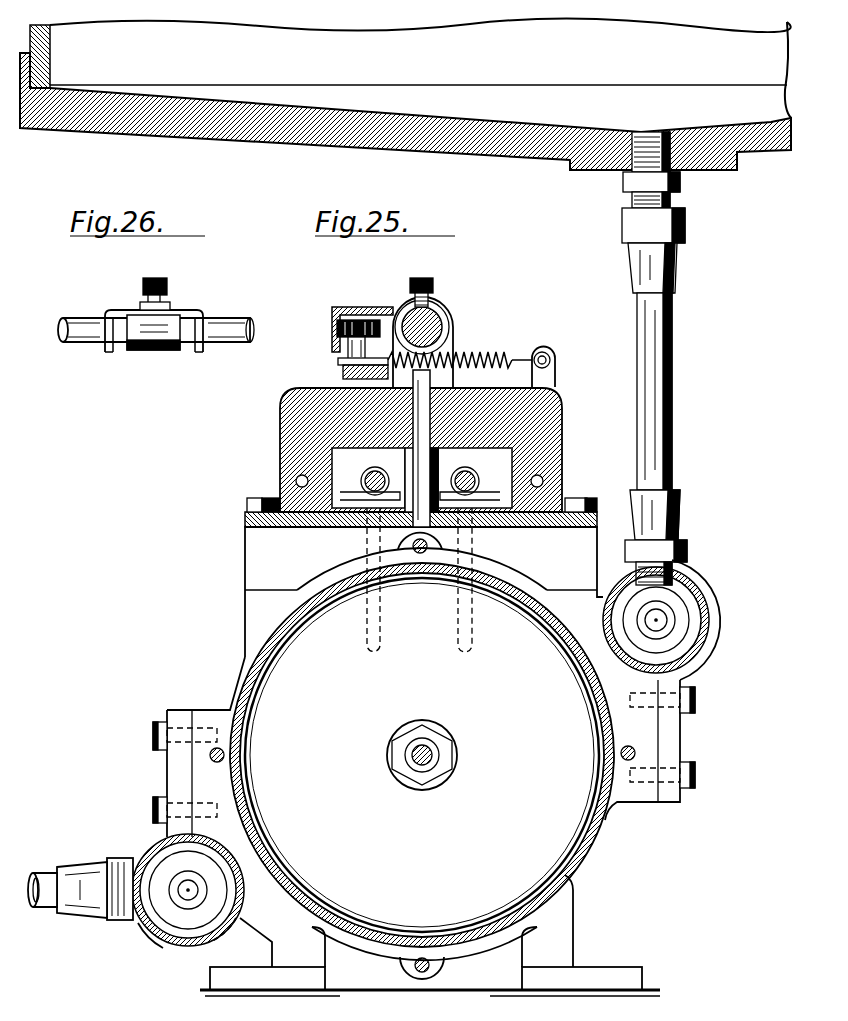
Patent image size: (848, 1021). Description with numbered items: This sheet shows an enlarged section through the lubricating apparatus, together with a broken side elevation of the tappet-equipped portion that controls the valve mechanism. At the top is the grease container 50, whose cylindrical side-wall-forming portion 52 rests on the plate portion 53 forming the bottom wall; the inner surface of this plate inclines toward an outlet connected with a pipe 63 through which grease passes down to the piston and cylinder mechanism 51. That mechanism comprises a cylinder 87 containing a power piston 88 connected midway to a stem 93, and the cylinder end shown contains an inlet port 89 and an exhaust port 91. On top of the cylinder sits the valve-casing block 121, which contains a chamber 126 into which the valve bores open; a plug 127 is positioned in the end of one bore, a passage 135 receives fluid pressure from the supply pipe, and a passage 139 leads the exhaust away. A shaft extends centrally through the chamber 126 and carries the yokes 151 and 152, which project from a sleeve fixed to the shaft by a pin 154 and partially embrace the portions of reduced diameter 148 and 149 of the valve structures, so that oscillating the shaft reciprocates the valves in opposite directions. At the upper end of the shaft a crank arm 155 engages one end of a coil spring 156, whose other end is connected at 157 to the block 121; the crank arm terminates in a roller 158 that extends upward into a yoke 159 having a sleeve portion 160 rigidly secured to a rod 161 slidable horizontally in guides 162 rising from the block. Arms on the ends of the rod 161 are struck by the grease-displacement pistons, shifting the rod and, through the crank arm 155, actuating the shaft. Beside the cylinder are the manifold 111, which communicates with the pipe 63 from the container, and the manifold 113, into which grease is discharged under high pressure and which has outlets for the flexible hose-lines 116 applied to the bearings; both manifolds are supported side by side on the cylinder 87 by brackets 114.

In FIG. 25, the grease container 50 is at (420, 68).
In FIG. 25, the cylindrical side-wall-forming portion 52 is at (50, 44).
In FIG. 25, the plate portion 53 is at (264, 133).
In FIG. 25, the pipe 63 is at (657, 405).
In FIG. 25, the piston and cylinder mechanism 51 is at (247, 684).
In FIG. 25, the cylinder 87 is at (580, 871).
In FIG. 25, the power piston 88 is at (562, 822).
In FIG. 25, the stem 93 is at (432, 768).
In FIG. 25, the chamber 126 is at (332, 472).
In FIG. 25, the yoke 152 is at (368, 478).
In FIG. 25, the yoke 151 is at (475, 478).
In FIG. 25, the portion of reduced diameter 149 is at (370, 479).
In FIG. 25, the portion of reduced diameter 148 is at (510, 476).
In FIG. 25, the passage 139 is at (295, 483).
In FIG. 25, the passage 135 is at (545, 482).
In FIG. 25, the pin 154 is at (436, 447).
In FIG. 25, the plug 127 is at (419, 416).
In FIG. 25, the valve-casing block 121 is at (485, 396).
In FIG. 25, the exhaust port 91 is at (365, 640).
In FIG. 25, the port 89 is at (475, 628).
In FIG. 25, the guides 162 is at (441, 316).
In FIG. 25, the sleeve portion 160 is at (443, 340).
In FIG. 26, the sleeve portion 160 is at (152, 350).
In FIG. 25, the rod 161 is at (413, 308).
In FIG. 26, the rod 161 is at (82, 326).
In FIG. 25, the yoke 159 is at (355, 308).
In FIG. 26, the yoke 159 is at (190, 311).
In FIG. 25, the roller 158 is at (340, 327).
In FIG. 25, the crank arm 155 is at (338, 378).
In FIG. 25, the coil spring 156 is at (495, 351).
In FIG. 25, the spring connection 157 is at (549, 370).
In FIG. 25, the manifold 111 is at (712, 622).
In FIG. 25, the brackets 114 is at (668, 731).
In FIG. 25, the manifold 113 is at (155, 850).
In FIG. 25, the flexible hose-lines 116 is at (48, 909).